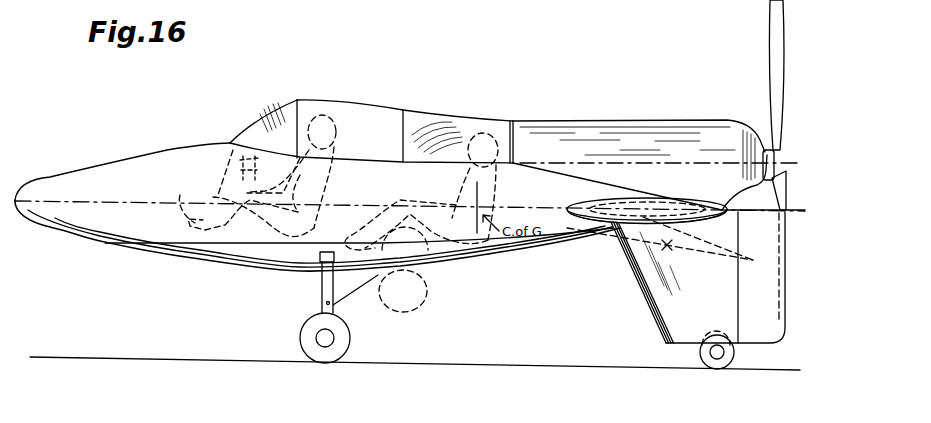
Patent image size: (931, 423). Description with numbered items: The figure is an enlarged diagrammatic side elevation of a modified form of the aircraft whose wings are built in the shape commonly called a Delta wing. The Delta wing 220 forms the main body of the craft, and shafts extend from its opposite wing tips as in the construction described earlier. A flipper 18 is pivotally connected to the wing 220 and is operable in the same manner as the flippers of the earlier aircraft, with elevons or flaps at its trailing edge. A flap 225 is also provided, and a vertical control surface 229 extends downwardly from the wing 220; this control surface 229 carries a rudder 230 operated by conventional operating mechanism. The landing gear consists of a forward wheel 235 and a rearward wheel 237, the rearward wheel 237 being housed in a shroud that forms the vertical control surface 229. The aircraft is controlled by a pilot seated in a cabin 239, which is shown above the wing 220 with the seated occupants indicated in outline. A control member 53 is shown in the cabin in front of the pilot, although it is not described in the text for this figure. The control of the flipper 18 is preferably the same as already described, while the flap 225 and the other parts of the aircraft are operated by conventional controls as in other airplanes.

The flipper 18 is at (572, 197).
The control stick 53 is at (245, 134).
The Delta wing 220 is at (100, 247).
The flap 225 is at (662, 247).
The vertical control surface 229 is at (648, 298).
The rudder 230 is at (757, 330).
The forward wheel 235 is at (307, 352).
The rearward wheel 237 is at (699, 350).
The cabin 239 is at (362, 114).